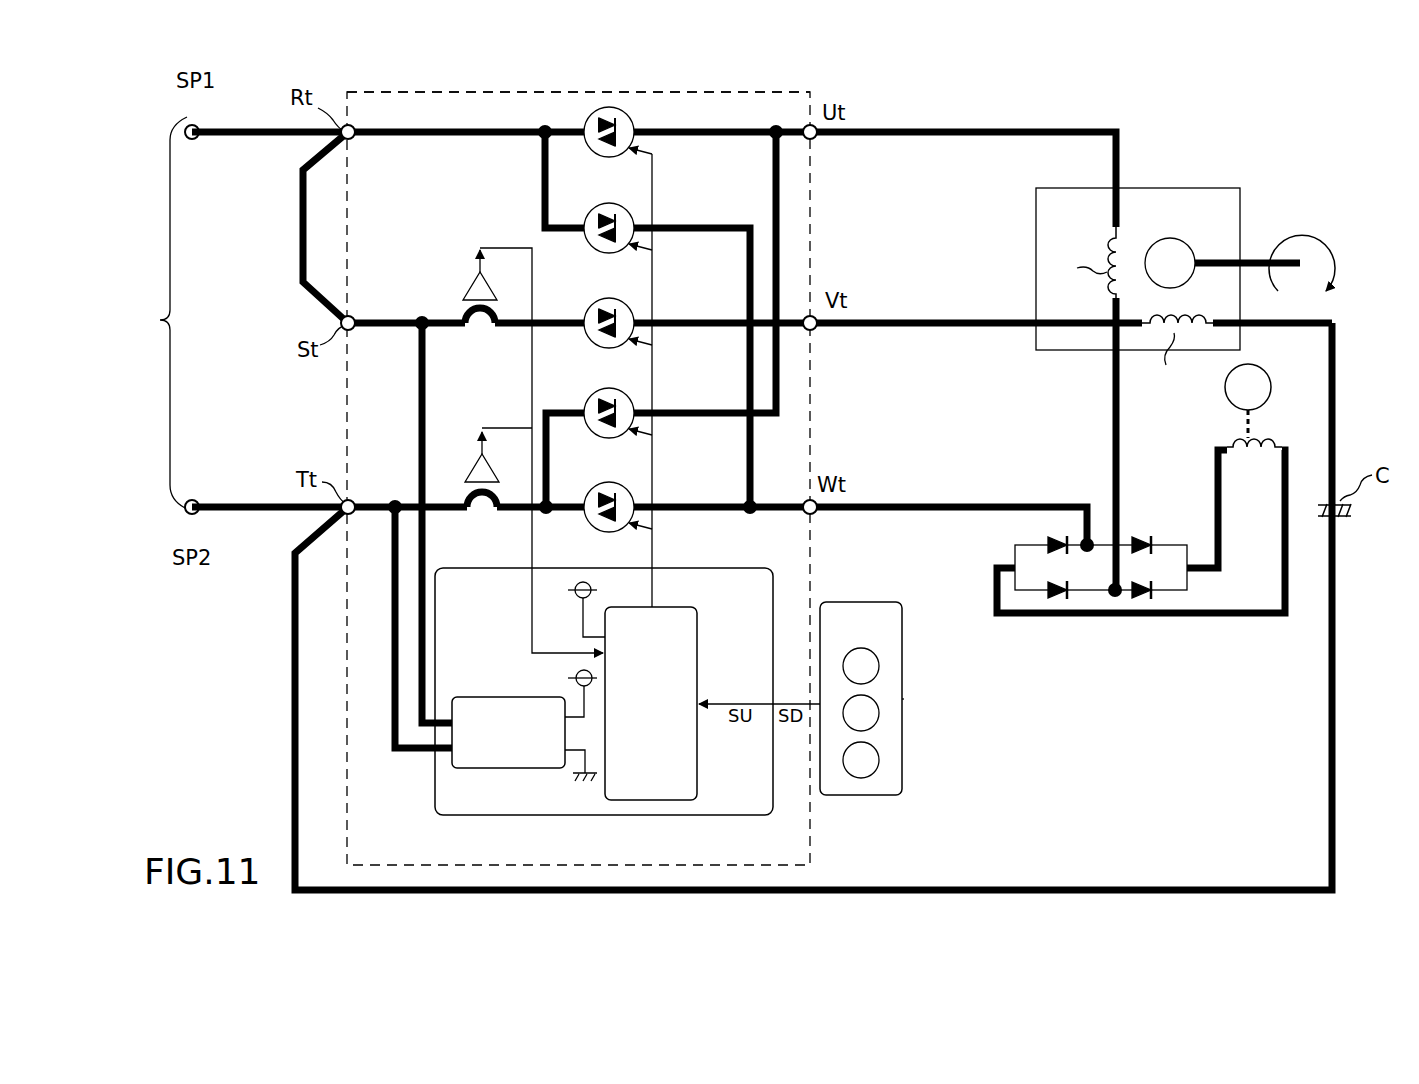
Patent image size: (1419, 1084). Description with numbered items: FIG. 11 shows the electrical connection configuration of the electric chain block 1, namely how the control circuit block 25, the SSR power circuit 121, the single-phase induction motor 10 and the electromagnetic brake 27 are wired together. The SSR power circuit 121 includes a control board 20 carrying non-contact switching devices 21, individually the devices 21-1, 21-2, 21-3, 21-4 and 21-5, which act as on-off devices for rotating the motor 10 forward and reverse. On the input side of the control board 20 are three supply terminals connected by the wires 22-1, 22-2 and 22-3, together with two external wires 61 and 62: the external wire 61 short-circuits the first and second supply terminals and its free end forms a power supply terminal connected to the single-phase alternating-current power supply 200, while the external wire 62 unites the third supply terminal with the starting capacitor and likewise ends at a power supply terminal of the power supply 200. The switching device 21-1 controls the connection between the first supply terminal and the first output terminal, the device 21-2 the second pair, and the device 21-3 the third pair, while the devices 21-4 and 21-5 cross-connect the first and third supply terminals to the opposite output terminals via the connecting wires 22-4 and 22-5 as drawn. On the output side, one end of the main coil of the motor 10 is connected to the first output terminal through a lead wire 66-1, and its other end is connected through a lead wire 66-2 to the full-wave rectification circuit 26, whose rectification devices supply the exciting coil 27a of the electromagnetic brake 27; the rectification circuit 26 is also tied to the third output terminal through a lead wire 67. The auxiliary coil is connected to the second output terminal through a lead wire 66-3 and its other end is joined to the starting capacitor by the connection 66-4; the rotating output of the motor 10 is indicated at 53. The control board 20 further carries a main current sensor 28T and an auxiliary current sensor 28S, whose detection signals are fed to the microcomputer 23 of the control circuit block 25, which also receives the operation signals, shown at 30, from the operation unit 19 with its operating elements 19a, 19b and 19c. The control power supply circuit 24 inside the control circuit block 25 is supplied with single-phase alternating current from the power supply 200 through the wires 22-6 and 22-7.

The electric chain block 1 is at (802, 60).
The single-phase induction motor 10 is at (1212, 160).
The operation unit 19 is at (886, 669).
The up button 19a is at (879, 713).
The down button 19b is at (879, 760).
The emergency stop button 19c is at (879, 666).
The control board 20 is at (697, 94).
The triac switching elements 21 is at (652, 324).
The non-contact switching device 21-1 is at (634, 126).
The non-contact switching device 21-2 is at (634, 316).
The non-contact switching device 21-3 is at (634, 501).
The non-contact switching device 21-4 is at (634, 220).
The non-contact switching device 21-5 is at (634, 406).
The R-phase power line 22-1 is at (382, 132).
The S-phase power line 22-2 is at (382, 317).
The T-phase power line 22-3 is at (382, 497).
The connection line 22-4 is at (752, 372).
The connection line 22-5 is at (788, 230).
The wire 22-6 is at (421, 678).
The wire 22-7 is at (394, 716).
The microcomputer 23 is at (697, 763).
The control power supply circuit 24 is at (490, 770).
The control circuit block 25 is at (628, 816).
The full-wave rectification circuit 26 is at (1088, 598).
The electromagnetic brake 27 is at (1276, 397).
The exciting coil 27a is at (1232, 443).
The auxiliary current sensor 28S is at (482, 333).
The main current sensor 28T is at (484, 515).
The operation signal 30 is at (905, 700).
The rotor / drive shaft 53 is at (1181, 249).
The external wire 61 is at (302, 278).
The external wire 62 is at (294, 582).
The lead wire 66-1 is at (1053, 128).
The lead wire 66-2 is at (1112, 393).
The lead wire 66-3 is at (952, 320).
The motor line X 66-4 is at (1336, 436).
The lead wire 67 is at (867, 502).
The SSR power circuit 121 is at (535, 91).
The single-phase alternating-current power supply 200 is at (150, 312).